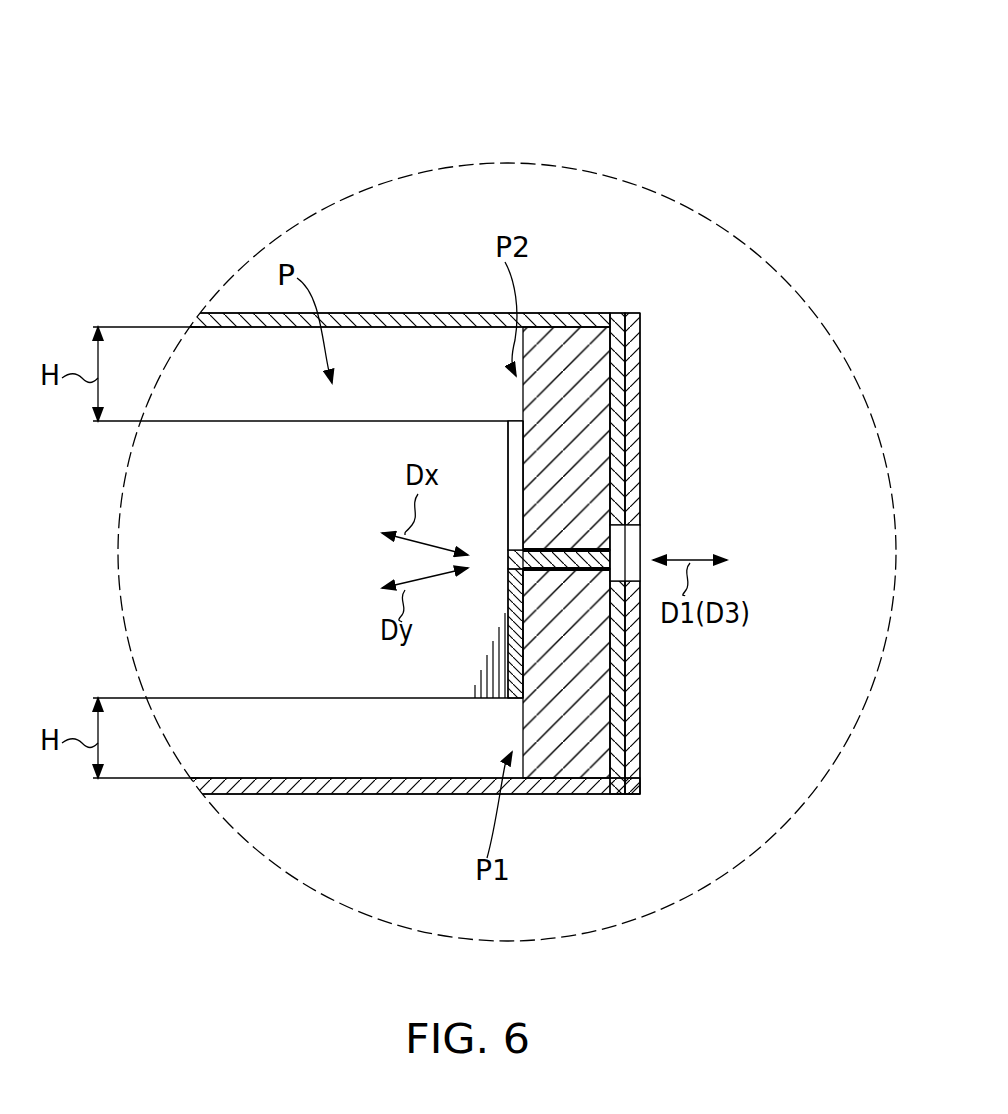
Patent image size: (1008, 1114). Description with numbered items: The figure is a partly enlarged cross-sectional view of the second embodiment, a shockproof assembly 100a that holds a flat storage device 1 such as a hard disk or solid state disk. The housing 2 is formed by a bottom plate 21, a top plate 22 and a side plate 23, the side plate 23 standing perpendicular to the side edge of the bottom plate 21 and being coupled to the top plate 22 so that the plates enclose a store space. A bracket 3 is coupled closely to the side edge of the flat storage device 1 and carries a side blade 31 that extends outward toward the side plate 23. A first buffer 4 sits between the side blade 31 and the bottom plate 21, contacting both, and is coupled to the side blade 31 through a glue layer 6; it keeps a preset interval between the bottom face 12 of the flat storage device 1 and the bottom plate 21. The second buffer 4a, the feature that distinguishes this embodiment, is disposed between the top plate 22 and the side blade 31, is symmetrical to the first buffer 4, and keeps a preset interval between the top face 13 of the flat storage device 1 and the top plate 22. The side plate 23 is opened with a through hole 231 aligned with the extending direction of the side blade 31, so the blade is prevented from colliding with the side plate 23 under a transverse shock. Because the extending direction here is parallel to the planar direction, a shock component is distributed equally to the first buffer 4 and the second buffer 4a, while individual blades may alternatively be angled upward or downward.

The shockproof assembly 100a is at (737, 90).
The flat storage device 1 is at (128, 542).
The housing 2 is at (458, 559).
The bracket 3 is at (512, 430).
The first buffer 4 is at (566, 559).
The second buffer 4a is at (580, 335).
The glue layer 6 is at (523, 576).
The bottom face 12 is at (420, 700).
The top face 13 is at (395, 421).
The bottom plate 21 is at (430, 787).
The top plate 22 is at (410, 325).
The side plate 23 is at (688, 553).
The side blade 31 is at (535, 549).
The through hole 231 is at (628, 540).